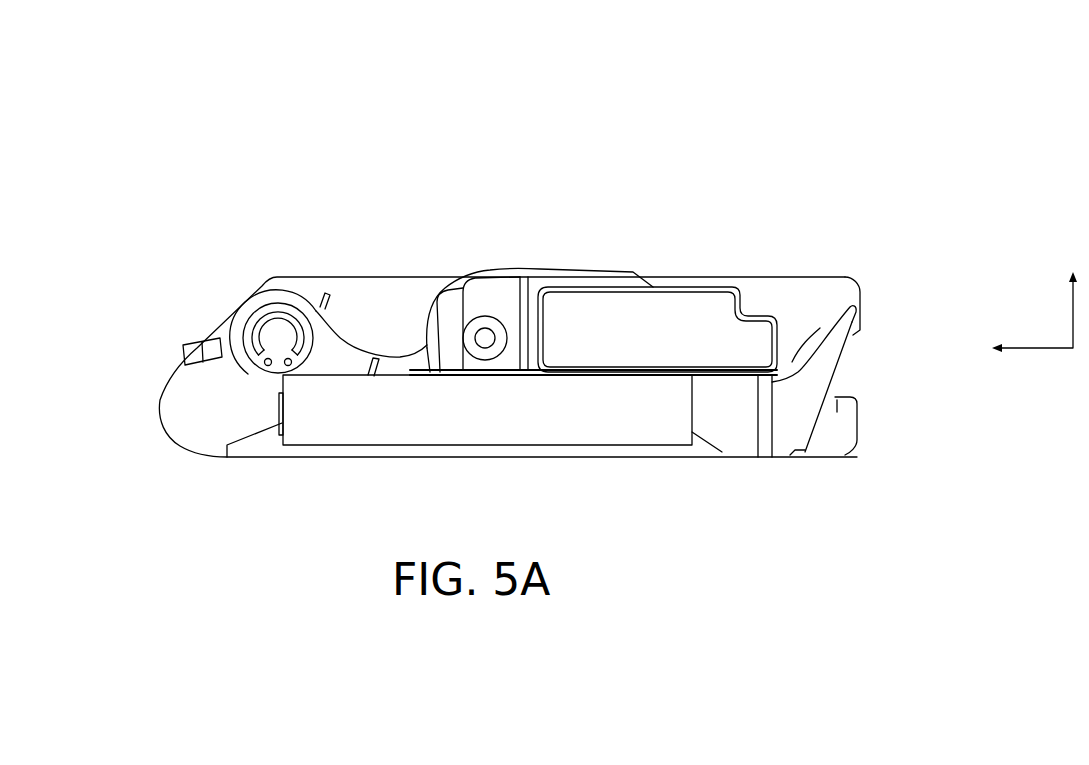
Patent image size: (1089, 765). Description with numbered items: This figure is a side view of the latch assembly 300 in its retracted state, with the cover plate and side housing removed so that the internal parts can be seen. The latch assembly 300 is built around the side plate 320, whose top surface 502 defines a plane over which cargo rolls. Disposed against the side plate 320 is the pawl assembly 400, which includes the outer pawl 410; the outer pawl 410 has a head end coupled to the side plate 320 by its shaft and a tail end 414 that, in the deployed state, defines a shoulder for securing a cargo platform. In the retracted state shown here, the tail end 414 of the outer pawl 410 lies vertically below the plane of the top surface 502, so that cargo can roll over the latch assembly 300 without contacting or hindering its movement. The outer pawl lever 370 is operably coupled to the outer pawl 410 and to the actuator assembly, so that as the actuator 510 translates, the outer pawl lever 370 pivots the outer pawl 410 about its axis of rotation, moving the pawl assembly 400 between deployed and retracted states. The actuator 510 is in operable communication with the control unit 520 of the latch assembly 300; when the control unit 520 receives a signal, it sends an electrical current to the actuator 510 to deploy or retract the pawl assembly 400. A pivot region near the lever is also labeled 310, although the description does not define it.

The latch assembly 300 is at (731, 180).
The top surface 502 is at (358, 277).
The side plate 320 is at (353, 305).
The outer pawl lever 370 is at (451, 328).
The pivot 310 is at (483, 295).
The control unit 520 is at (680, 346).
The actuator 510 is at (510, 441).
The pawl assembly 400 is at (803, 352).
The outer pawl 410 is at (810, 392).
The tail end 414 is at (795, 415).